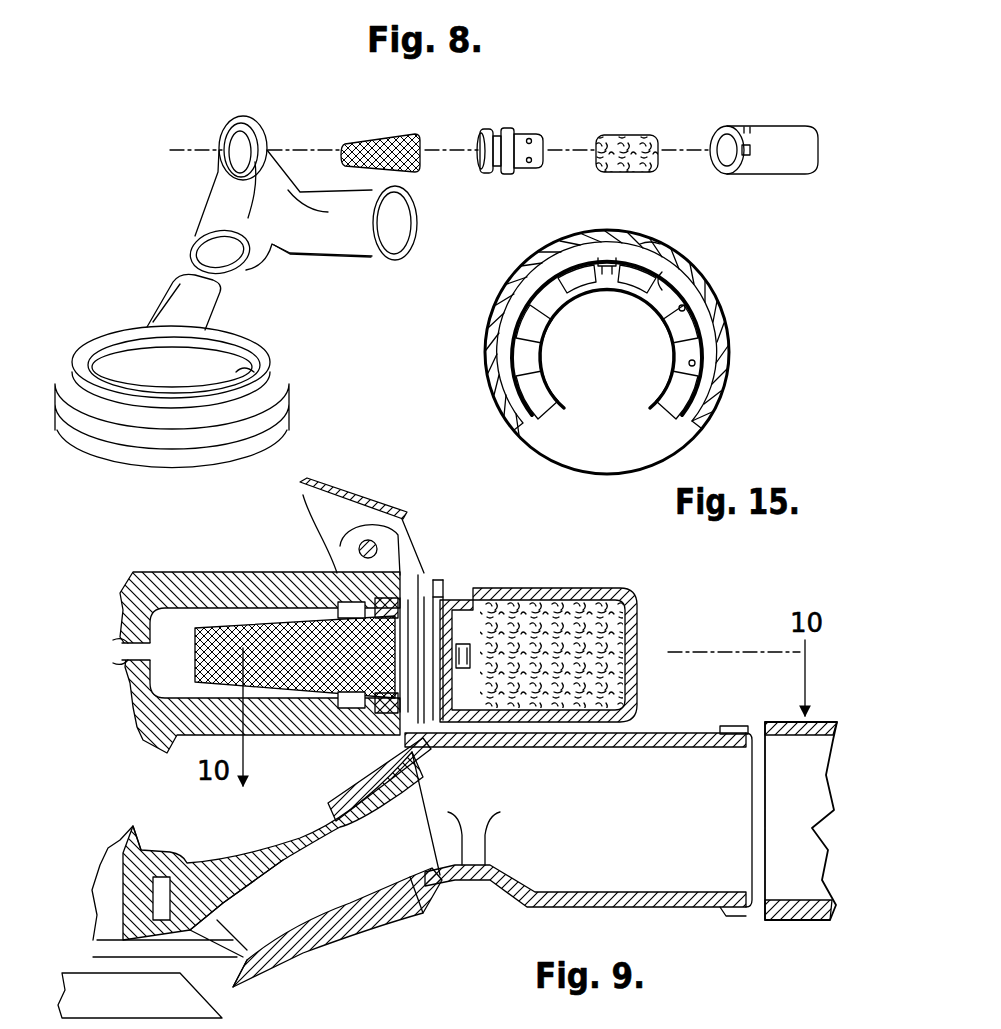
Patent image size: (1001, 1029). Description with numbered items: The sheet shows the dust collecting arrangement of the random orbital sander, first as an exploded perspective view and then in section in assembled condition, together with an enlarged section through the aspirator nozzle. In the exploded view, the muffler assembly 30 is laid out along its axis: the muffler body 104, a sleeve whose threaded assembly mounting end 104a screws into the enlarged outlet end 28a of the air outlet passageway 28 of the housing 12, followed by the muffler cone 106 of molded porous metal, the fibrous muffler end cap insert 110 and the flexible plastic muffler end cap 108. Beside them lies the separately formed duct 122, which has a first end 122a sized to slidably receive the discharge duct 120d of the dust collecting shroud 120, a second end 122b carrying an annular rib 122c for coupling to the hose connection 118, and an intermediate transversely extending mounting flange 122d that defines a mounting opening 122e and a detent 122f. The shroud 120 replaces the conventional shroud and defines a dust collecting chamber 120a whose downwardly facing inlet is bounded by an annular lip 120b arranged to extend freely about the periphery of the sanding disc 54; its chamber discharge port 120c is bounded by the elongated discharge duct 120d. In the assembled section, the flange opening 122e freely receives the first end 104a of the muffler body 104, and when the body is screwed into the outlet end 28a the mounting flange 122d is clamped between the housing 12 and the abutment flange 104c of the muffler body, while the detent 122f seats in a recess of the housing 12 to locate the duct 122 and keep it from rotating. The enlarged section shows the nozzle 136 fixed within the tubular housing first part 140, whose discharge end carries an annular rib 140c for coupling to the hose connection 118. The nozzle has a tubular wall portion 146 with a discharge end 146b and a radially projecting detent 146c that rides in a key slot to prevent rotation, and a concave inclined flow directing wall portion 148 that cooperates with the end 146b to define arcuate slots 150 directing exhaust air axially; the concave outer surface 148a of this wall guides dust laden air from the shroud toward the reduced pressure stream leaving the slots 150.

In FIG. 9, the housing 12 is at (220, 746).
In FIG. 9, the air outlet passageway 28 is at (122, 655).
In FIG. 9, the outlet end 28a is at (118, 643).
In FIG. 9, the muffler assembly 30 is at (650, 598).
In FIG. 9, the sanding disc 54 is at (225, 1008).
In FIG. 8, the muffler body 104 is at (513, 121).
In FIG. 9, the muffler body 104 is at (442, 602).
In FIG. 9, the assembly mounting end 104a is at (345, 600).
In FIG. 9, the abutment flange 104c is at (428, 575).
In FIG. 8, the muffler cone 106 is at (378, 140).
In FIG. 9, the muffler cone 106 is at (215, 628).
In FIG. 8, the muffler end cap 108 is at (781, 132).
In FIG. 9, the muffler end cap 108 is at (538, 630).
In FIG. 8, the muffler end cap insert 110 is at (622, 135).
In FIG. 9, the muffler end cap insert 110 is at (525, 588).
In FIG. 9, the hose connection 118 is at (805, 920).
In FIG. 8, the dust collecting shroud 120 is at (212, 386).
In FIG. 9, the dust collecting shroud 120 is at (326, 879).
In FIG. 8, the dust collecting chamber 120a is at (246, 378).
In FIG. 9, the dust collecting chamber 120a is at (223, 932).
In FIG. 8, the annular lip 120b is at (140, 470).
In FIG. 9, the annular lip 120b is at (236, 988).
In FIG. 9, the chamber discharge port 120c is at (282, 925).
In FIG. 8, the discharge duct 120d is at (165, 302).
In FIG. 9, the discharge duct 120d is at (405, 918).
In FIG. 8, the duct 122 is at (289, 212).
In FIG. 9, the duct 122 is at (529, 818).
In FIG. 8, the first end 122a is at (208, 225).
In FIG. 9, the first end 122a is at (356, 795).
In FIG. 8, the second end 122b is at (318, 256).
In FIG. 9, the second end 122b is at (585, 906).
In FIG. 8, the annular rib 122c is at (415, 213).
In FIG. 9, the annular rib 122c is at (722, 908).
In FIG. 8, the mounting flange 122d is at (222, 162).
In FIG. 9, the mounting flange 122d is at (412, 570).
In FIG. 8, the mounting opening 122e is at (228, 120).
In FIG. 9, the mounting opening 122e is at (460, 700).
In FIG. 8, the detent 122f is at (263, 148).
In FIG. 15, the nozzle 136 is at (607, 338).
In FIG. 15, the housing first part 140 is at (594, 327).
In FIG. 15, the annular rib 140c is at (650, 246).
In FIG. 15, the tubular wall portion 146 is at (553, 310).
In FIG. 15, the discharge end 146b is at (512, 377).
In FIG. 15, the detent 146c is at (604, 256).
In FIG. 15, the flow directing wall portion 148 is at (665, 447).
In FIG. 15, the concave outer surface 148a is at (612, 395).
In FIG. 15, the arcuate slots 150 is at (690, 362).